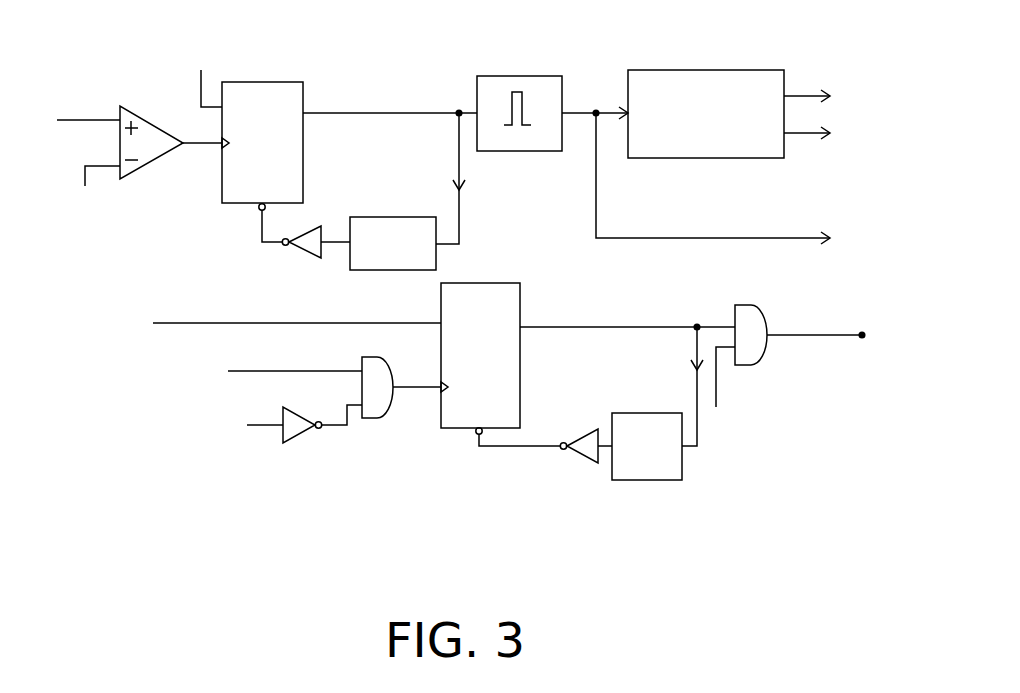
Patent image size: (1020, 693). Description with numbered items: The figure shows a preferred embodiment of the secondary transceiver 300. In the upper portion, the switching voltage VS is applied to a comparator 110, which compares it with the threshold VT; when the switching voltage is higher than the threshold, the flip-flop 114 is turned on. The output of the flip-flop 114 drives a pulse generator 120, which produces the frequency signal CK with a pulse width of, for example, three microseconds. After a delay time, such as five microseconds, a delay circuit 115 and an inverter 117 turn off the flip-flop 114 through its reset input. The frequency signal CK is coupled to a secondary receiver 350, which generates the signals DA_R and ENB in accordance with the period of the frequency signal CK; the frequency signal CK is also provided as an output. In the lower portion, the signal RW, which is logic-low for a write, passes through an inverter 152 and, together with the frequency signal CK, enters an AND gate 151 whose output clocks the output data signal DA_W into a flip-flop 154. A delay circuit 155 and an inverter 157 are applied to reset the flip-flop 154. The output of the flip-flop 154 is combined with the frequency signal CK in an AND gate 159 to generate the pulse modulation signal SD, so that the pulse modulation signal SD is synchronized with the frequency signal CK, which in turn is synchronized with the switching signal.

The secondary transceiver 300 is at (827, 605).
The comparator 110 is at (148, 162).
The flip-flop 114 is at (270, 82).
The delay circuit 115 is at (395, 215).
The inverter 117 is at (302, 259).
The pulse generator 120 is at (498, 75).
The secondary receiver 350 is at (725, 126).
The AND gate 151 is at (372, 420).
The inverter 152 is at (300, 446).
The flip-flop 154 is at (520, 372).
The delay circuit 155 is at (655, 481).
The inverter 157 is at (580, 465).
The AND gate 159 is at (748, 366).